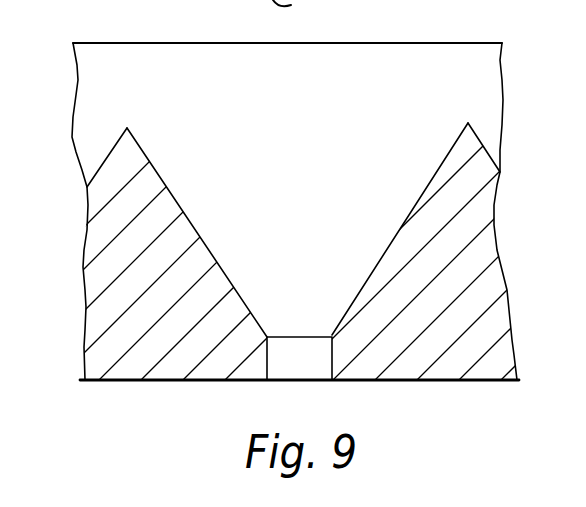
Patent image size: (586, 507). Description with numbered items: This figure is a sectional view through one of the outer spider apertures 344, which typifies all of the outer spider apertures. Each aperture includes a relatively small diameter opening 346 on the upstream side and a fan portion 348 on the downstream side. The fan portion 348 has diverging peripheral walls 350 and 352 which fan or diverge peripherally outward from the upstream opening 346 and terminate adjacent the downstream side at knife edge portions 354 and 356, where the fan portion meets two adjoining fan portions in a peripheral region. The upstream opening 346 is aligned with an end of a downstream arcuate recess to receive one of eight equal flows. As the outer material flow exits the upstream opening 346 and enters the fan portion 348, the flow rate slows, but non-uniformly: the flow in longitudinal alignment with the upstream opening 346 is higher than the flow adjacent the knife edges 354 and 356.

The workpiece body 344 is at (411, 67).
The upstream opening 346 is at (305, 370).
The fan portion 348 is at (310, 273).
The diverging peripheral wall 350 is at (197, 232).
The diverging peripheral wall 352 is at (397, 233).
The knife edge portion 354 is at (127, 128).
The knife edge portion 356 is at (468, 123).